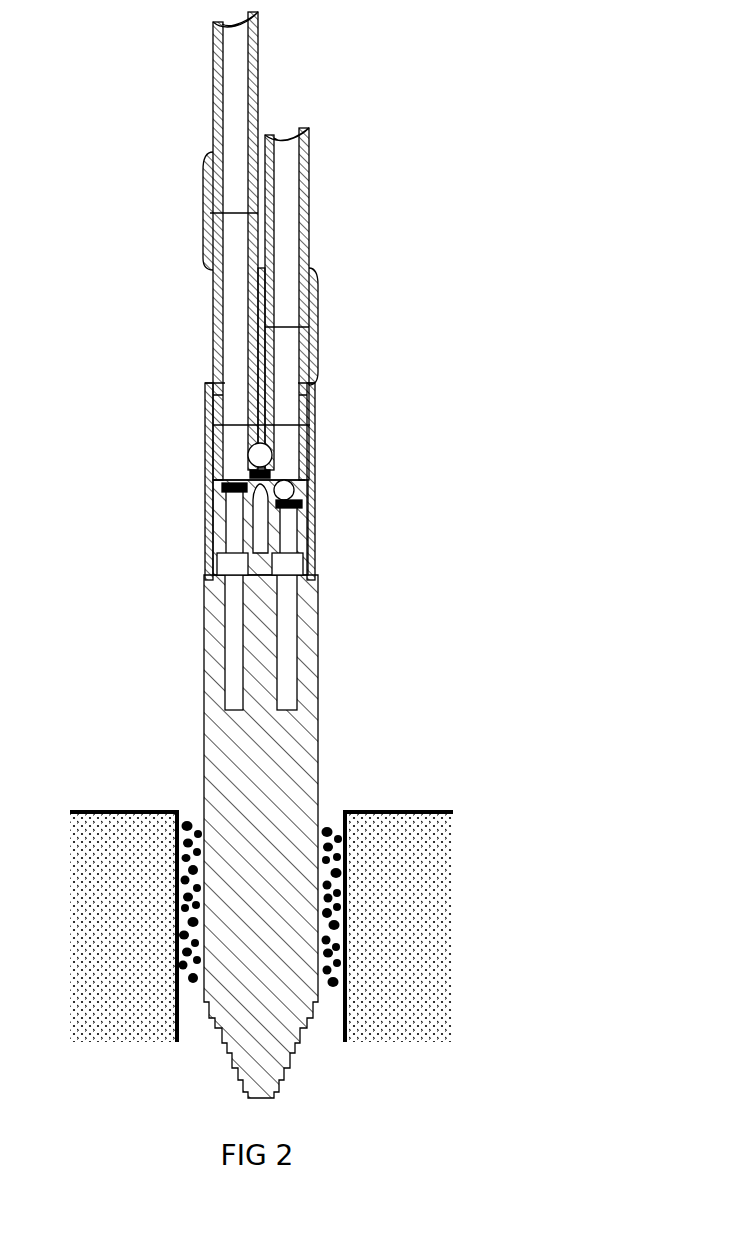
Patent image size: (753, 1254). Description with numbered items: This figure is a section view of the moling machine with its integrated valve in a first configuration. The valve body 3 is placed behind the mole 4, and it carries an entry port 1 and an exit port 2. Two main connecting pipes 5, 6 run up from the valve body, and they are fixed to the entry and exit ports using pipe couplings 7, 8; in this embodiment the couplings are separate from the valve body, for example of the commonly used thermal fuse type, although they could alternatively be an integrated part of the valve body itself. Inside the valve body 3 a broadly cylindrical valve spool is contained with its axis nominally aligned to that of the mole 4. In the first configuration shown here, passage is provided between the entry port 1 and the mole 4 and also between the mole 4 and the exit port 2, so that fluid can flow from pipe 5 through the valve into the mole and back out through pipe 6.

The entry port 1 is at (237, 380).
The exit port 2 is at (288, 393).
The valve body 3 is at (305, 482).
The mole 4 is at (222, 803).
The main connecting pipe 5 is at (215, 53).
The main connecting pipe 6 is at (310, 163).
The pipe coupling 7 is at (208, 213).
The pipe coupling 8 is at (315, 308).